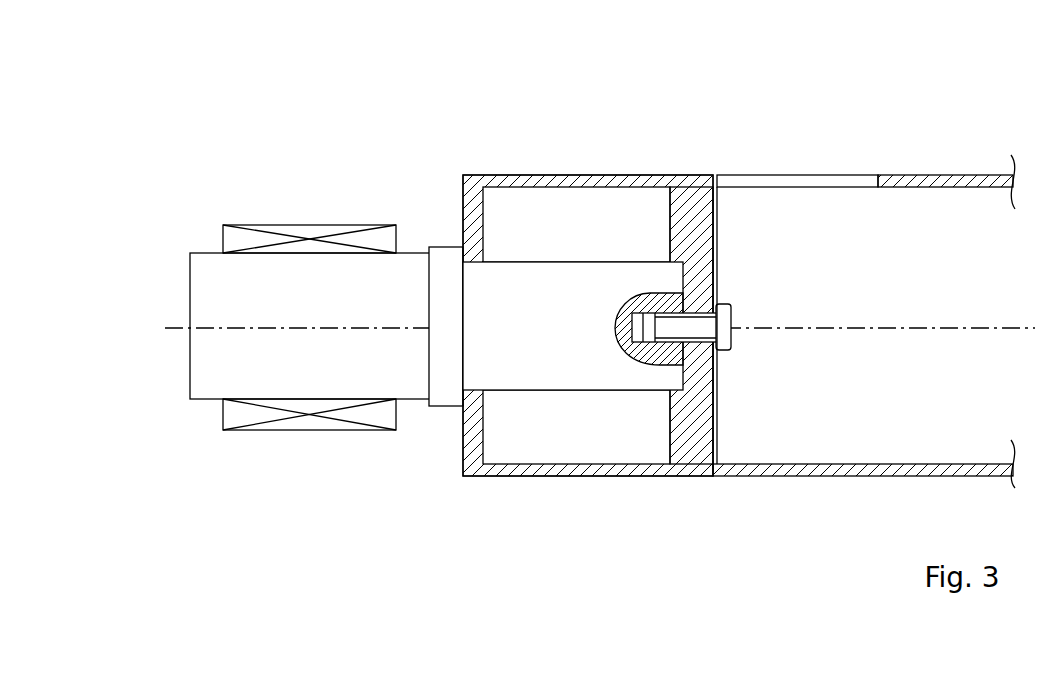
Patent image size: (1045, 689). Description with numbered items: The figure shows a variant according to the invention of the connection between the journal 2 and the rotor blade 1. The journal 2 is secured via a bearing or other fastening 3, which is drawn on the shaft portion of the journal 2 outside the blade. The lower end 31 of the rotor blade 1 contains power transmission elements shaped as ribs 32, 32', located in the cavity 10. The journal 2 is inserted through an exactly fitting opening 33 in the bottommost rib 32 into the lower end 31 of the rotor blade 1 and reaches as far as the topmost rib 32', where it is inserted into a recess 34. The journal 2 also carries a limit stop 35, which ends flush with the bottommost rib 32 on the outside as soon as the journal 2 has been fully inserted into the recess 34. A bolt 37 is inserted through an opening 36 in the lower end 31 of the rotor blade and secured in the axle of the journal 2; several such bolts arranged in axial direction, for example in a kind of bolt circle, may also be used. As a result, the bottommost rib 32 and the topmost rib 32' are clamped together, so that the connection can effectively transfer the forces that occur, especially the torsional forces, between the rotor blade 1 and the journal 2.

The rotor blade 1 is at (940, 182).
The journal 2 is at (400, 330).
The bearing 3 is at (311, 242).
The cavity 10 is at (886, 268).
The lower end 31 is at (589, 122).
The bottommost rib 32 is at (579, 383).
The topmost rib 32' is at (696, 387).
The opening 33 is at (475, 391).
The recess 34 is at (683, 373).
The limit stop 35 is at (447, 263).
The opening 36 is at (796, 178).
The bolt 37 is at (727, 325).